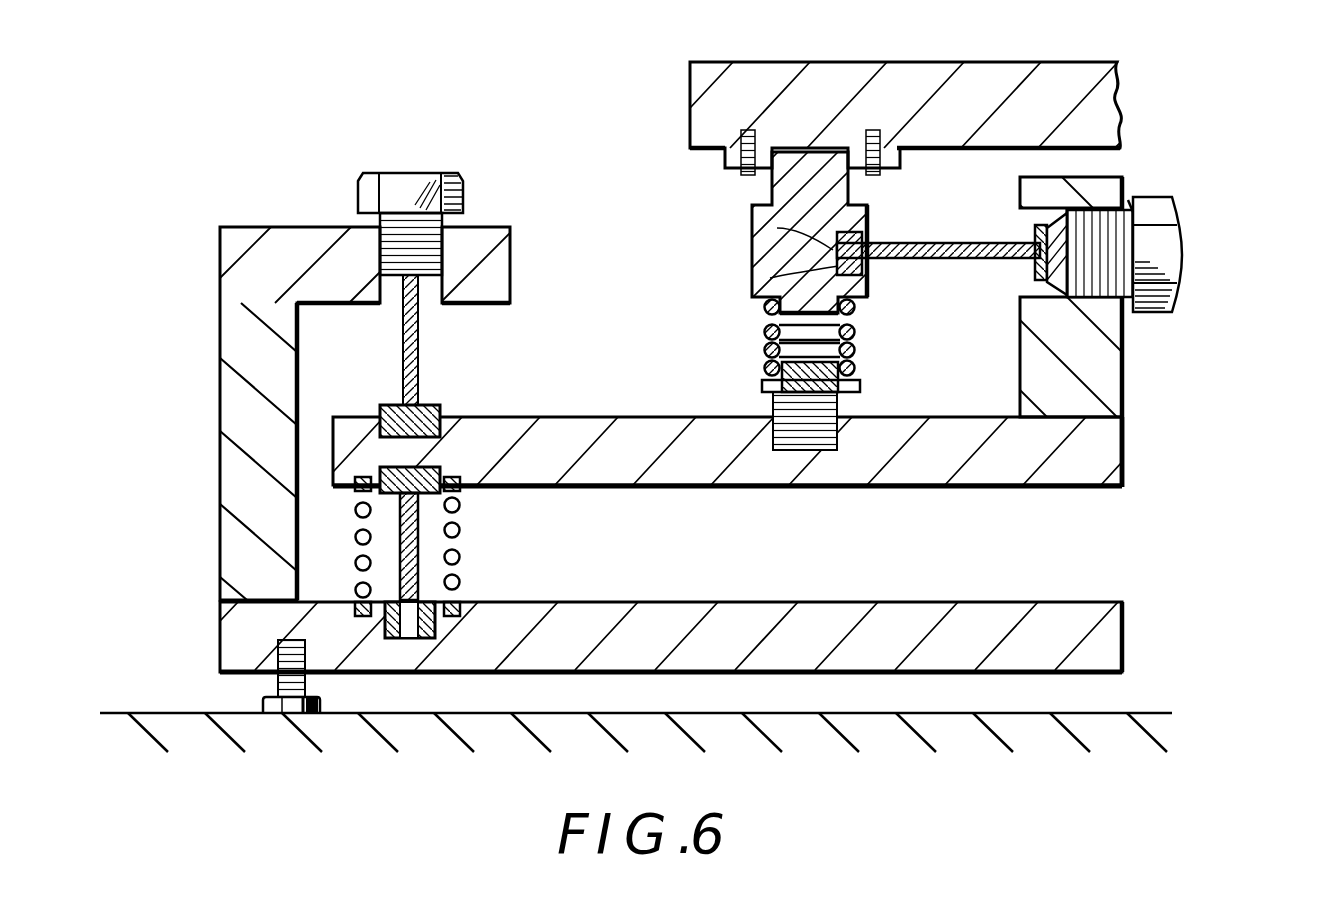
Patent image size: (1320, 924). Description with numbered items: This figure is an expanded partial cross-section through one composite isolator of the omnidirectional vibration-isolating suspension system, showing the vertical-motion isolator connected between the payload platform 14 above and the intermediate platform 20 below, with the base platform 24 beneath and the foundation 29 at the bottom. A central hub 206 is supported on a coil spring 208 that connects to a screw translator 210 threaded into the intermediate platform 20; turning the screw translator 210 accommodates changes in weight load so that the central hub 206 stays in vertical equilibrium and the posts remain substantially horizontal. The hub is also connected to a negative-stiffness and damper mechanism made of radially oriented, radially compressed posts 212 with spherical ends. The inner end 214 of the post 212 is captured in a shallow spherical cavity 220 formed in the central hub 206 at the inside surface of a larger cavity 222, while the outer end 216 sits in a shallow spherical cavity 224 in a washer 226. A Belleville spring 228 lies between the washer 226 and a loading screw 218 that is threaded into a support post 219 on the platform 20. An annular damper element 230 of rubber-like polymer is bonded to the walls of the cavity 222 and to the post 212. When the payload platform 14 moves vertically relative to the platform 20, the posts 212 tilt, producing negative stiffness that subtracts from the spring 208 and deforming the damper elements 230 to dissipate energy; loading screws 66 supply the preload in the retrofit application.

The payload platform 14 is at (855, 62).
The intermediate platform 20 is at (957, 487).
The base platform 24 is at (797, 603).
The foundation 29 is at (1136, 713).
The loading screw 66 is at (403, 175).
The central hub 206 is at (752, 258).
The coil spring 208 is at (765, 350).
The screw translator 210 is at (862, 386).
The post 212 is at (1002, 243).
The inner end 214 is at (870, 263).
The outer end 216 is at (1176, 298).
The loading screw 218 is at (1182, 256).
The support post 219 is at (1125, 372).
The shallow spherical cavity 220 is at (777, 222).
The cavity 222 is at (855, 236).
The shallow spherical cavity 224 is at (1128, 200).
The washer 226 is at (1053, 300).
The Belleville spring 228 is at (1110, 207).
The annular damper element 230 is at (770, 278).